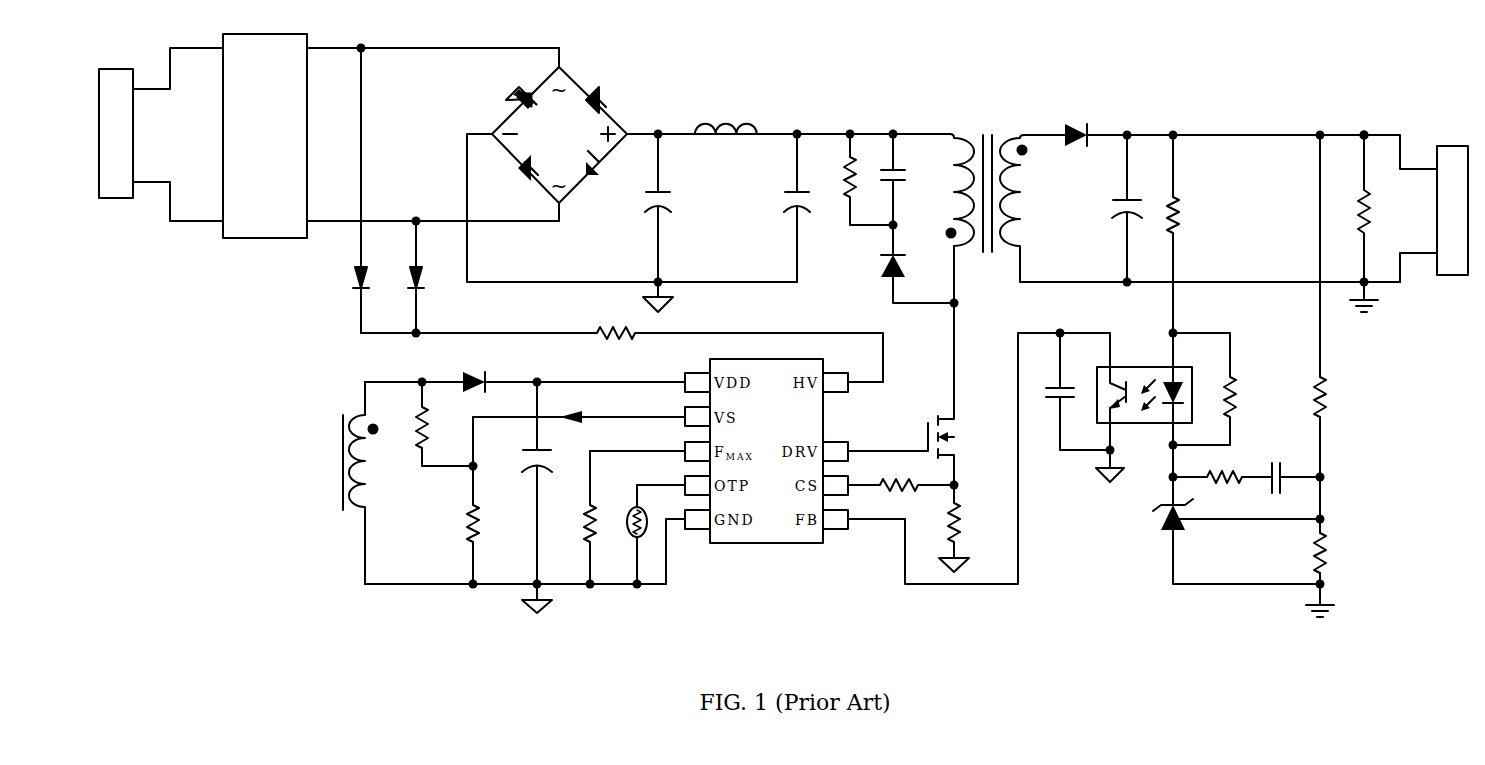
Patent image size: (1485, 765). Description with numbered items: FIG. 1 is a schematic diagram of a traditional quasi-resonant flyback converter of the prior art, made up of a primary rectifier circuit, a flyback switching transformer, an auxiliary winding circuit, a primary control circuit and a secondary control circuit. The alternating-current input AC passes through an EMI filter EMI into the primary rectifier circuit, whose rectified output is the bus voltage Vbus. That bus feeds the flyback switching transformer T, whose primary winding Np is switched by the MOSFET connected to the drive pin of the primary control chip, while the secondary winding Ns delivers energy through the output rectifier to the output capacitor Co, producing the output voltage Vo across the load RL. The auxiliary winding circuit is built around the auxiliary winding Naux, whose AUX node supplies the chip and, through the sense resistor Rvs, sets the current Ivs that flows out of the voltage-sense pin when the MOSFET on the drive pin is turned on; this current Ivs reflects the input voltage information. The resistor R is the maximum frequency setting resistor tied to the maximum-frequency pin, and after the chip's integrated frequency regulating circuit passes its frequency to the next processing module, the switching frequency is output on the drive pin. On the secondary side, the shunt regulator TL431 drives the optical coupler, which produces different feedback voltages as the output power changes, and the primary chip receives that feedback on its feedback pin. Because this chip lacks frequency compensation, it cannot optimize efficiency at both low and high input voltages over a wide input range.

The AC input source AC is at (161, 134).
The EMI filter EMI is at (265, 136).
The bus voltage Vbus is at (655, 124).
The transformer T is at (987, 181).
The primary winding Np is at (946, 218).
The secondary winding Ns is at (1200, 208).
The output capacitor Co is at (1110, 208).
The output voltage node Vo is at (1363, 123).
The load resistor RL is at (1378, 208).
The auxiliary winding node AUX is at (521, 375).
The auxiliary winding Naux is at (331, 483).
The voltage sense resistor Rvs is at (444, 424).
The outflowing current from the VS pin Ivs is at (583, 408).
The maximum frequency setting resistor R is at (597, 517).
The shunt regulator TL431 is at (1203, 541).